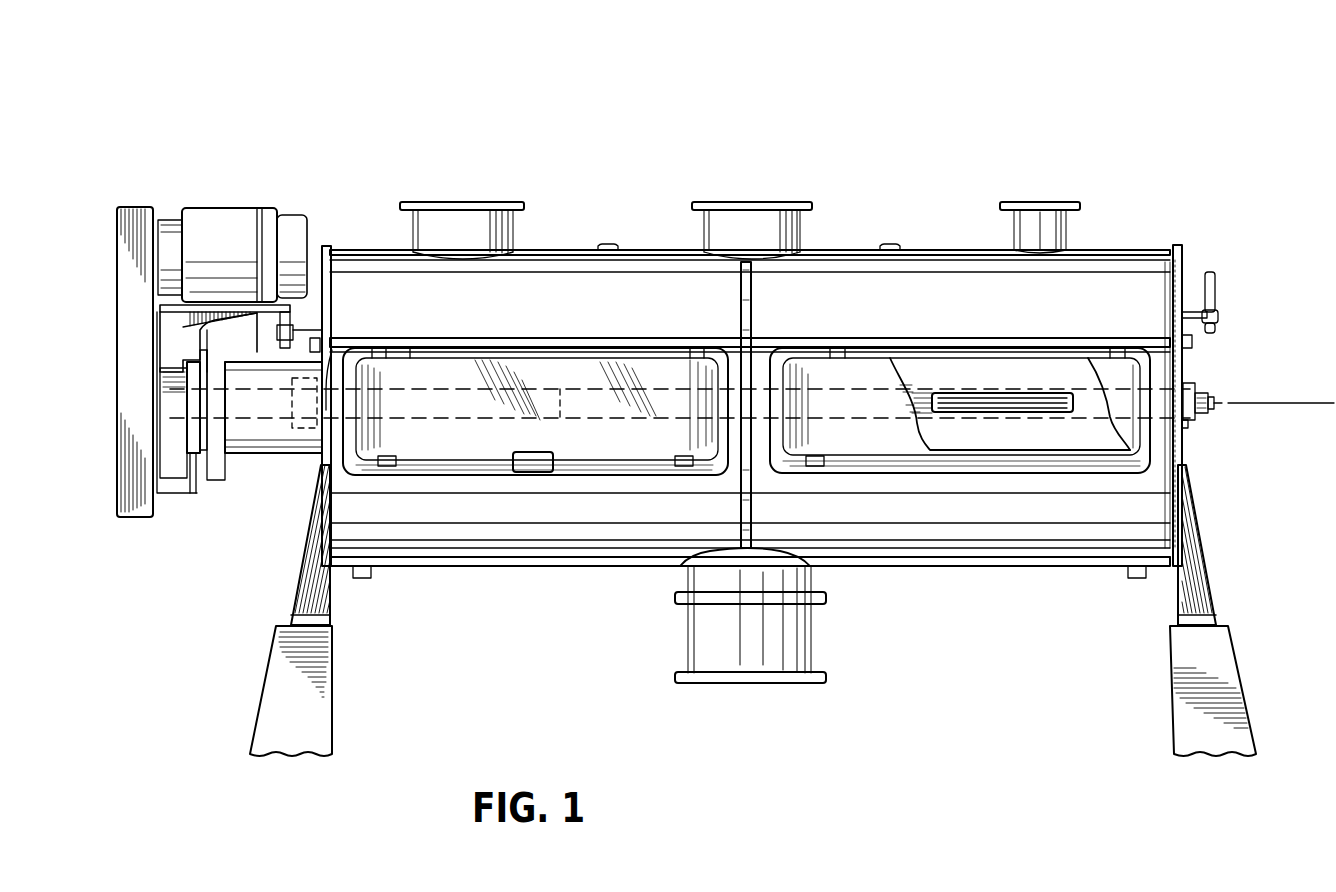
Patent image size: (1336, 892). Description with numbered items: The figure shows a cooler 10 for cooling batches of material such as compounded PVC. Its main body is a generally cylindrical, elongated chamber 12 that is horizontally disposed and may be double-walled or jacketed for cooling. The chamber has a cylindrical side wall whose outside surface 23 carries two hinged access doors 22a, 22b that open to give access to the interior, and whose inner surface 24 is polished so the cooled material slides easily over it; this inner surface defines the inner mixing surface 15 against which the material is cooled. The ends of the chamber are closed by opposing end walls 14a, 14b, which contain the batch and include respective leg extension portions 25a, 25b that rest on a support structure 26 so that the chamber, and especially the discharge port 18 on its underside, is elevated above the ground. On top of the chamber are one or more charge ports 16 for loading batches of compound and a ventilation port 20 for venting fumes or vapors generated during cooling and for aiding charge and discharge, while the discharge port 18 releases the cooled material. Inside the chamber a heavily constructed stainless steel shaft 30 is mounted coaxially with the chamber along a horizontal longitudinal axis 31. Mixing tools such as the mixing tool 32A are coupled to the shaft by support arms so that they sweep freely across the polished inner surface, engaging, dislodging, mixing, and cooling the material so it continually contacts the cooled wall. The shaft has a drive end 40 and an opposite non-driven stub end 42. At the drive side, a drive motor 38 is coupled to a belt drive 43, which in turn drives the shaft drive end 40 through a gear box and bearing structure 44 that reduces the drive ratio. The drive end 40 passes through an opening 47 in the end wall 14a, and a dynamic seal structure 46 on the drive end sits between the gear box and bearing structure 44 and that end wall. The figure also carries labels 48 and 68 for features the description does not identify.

The cooler 10 is at (881, 72).
The chamber 12 is at (1124, 250).
The end wall 14a is at (328, 251).
The end wall 14b is at (1186, 368).
The inner mixing surface 15 is at (1065, 374).
The charge port 16 is at (462, 204).
The discharge port 18 is at (815, 650).
The ventilation port 20 is at (1040, 204).
The access door 22a is at (653, 373).
The access door 22b is at (835, 373).
The outside surface 23 is at (450, 325).
The inner surface 24 is at (922, 372).
The leg extension portion 25a is at (330, 617).
The leg extension portion 25b is at (1176, 612).
The support structure 26 is at (320, 726).
The shaft 30 is at (555, 384).
The longitudinal axis 31 is at (1289, 404).
The mixing tool 32A is at (986, 384).
The drive motor 38 is at (208, 206).
The drive end 40 is at (274, 418).
The stub end 42 is at (1222, 403).
The belt drive 43 is at (126, 374).
The gear box and bearing structure 44 is at (175, 480).
The dynamic seal structure 46 is at (300, 458).
The opening 47 is at (327, 384).
The bearing 48 is at (1186, 426).
The handle 68 is at (1194, 386).